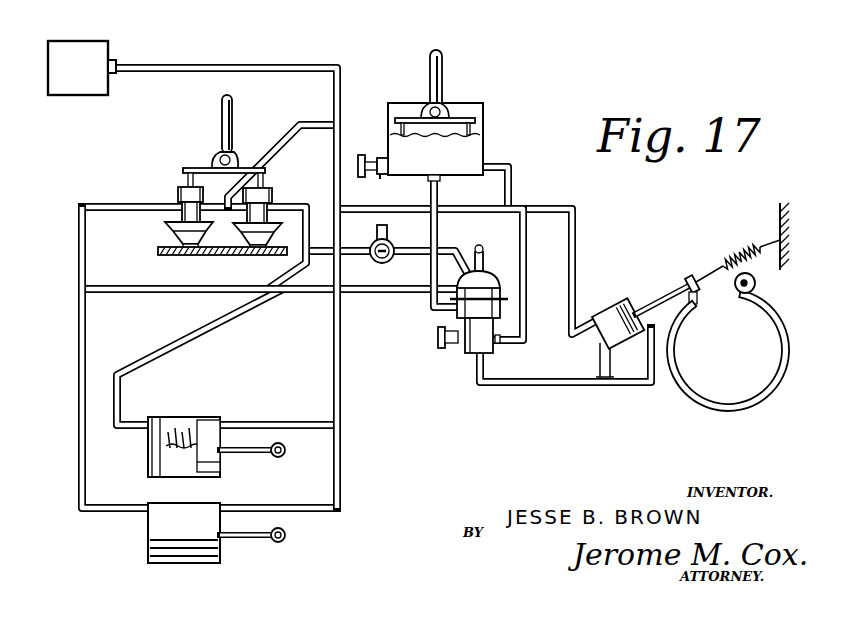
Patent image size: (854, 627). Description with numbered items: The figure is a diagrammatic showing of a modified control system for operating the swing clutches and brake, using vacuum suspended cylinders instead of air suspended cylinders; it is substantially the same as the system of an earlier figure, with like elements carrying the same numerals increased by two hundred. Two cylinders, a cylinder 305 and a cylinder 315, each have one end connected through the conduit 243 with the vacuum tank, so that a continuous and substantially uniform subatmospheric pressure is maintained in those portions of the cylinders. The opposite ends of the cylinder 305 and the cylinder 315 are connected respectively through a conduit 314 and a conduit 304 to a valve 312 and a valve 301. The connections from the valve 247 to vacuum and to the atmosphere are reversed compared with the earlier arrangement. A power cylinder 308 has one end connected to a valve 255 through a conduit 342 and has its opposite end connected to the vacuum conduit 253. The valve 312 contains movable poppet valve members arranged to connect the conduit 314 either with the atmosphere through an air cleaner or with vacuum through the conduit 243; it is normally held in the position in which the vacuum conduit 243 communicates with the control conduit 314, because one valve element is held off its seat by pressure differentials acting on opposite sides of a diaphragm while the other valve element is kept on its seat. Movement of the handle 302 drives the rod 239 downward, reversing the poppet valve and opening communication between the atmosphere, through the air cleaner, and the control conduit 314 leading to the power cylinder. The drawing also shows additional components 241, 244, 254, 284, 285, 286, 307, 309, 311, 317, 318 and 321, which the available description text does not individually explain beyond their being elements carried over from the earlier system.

The control unit 241 is at (103, 37).
The conduit 243 is at (218, 52).
The valve actuating bar 244 is at (212, 152).
The rod 239 is at (188, 176).
The valve 247 is at (493, 99).
The vacuum conduit 253 is at (566, 210).
The conduit 254 is at (526, 282).
The valve 255 is at (472, 344).
The fitting 284 is at (373, 181).
The adjusting knob 285 is at (376, 146).
The conduit 286 is at (511, 184).
The valve 301 is at (266, 196).
The handle 302 is at (222, 103).
The conduit 304 is at (325, 202).
The cylinder 305 is at (209, 428).
The valve 307 is at (352, 256).
The power cylinder 308 is at (603, 318).
The ring 309 is at (670, 360).
The spring 311 is at (734, 258).
The valve 312 is at (178, 192).
The conduit 314 is at (79, 252).
The cylinder 315 is at (163, 530).
The conduit 317 is at (181, 290).
The conduit 318 is at (390, 258).
The conduit 321 is at (434, 236).
The conduit 342 is at (515, 384).